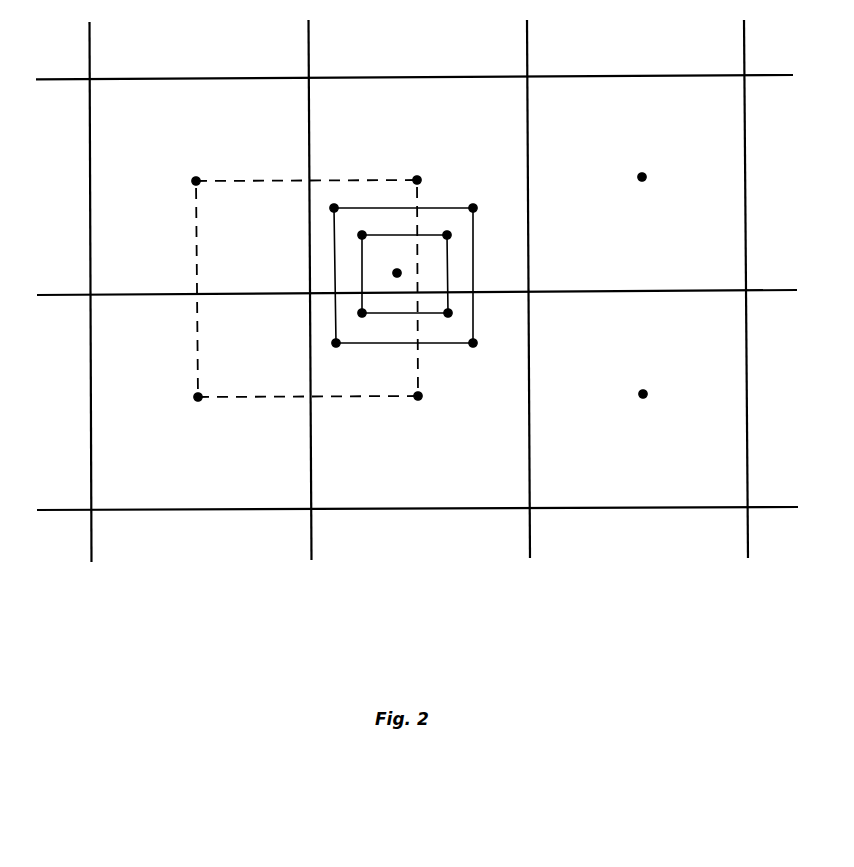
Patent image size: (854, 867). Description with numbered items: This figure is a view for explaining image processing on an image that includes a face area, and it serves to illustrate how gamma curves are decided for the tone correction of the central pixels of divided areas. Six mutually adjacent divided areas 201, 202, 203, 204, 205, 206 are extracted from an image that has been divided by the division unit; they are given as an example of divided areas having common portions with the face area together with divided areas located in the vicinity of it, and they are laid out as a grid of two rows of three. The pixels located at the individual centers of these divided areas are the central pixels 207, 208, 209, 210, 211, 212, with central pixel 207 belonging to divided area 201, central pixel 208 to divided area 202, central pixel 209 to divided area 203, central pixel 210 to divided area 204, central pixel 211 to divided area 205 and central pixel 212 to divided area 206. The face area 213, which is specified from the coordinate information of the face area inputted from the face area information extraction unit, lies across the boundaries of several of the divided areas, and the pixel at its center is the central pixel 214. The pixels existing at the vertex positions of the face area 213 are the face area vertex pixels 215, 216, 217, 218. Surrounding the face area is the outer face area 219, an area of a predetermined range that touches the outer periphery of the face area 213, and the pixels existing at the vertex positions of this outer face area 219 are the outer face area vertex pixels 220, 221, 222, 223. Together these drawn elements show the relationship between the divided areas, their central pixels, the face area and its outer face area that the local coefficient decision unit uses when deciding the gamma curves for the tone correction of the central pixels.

The divided area 201 is at (185, 102).
The divided area 202 is at (408, 102).
The divided area 203 is at (643, 100).
The divided area 204 is at (194, 493).
The divided area 205 is at (422, 488).
The divided area 206 is at (650, 487).
The central pixel 207 is at (197, 177).
The central pixel 208 is at (417, 178).
The central pixel 209 is at (643, 173).
The central pixel 210 is at (198, 401).
The central pixel 211 is at (418, 400).
The central pixel 212 is at (643, 397).
The face area 213 is at (433, 263).
The central pixel 214 is at (395, 262).
The face area vertex pixel 215 is at (395, 262).
The face area vertex pixel 216 is at (448, 225).
The face area vertex pixel 217 is at (365, 324).
The face area vertex pixel 218 is at (448, 324).
The outer face area 219 is at (462, 282).
The outer face area vertex pixel 220 is at (334, 205).
The outer face area vertex pixel 221 is at (473, 205).
The outer face area vertex pixel 222 is at (336, 346).
The outer face area vertex pixel 223 is at (473, 346).